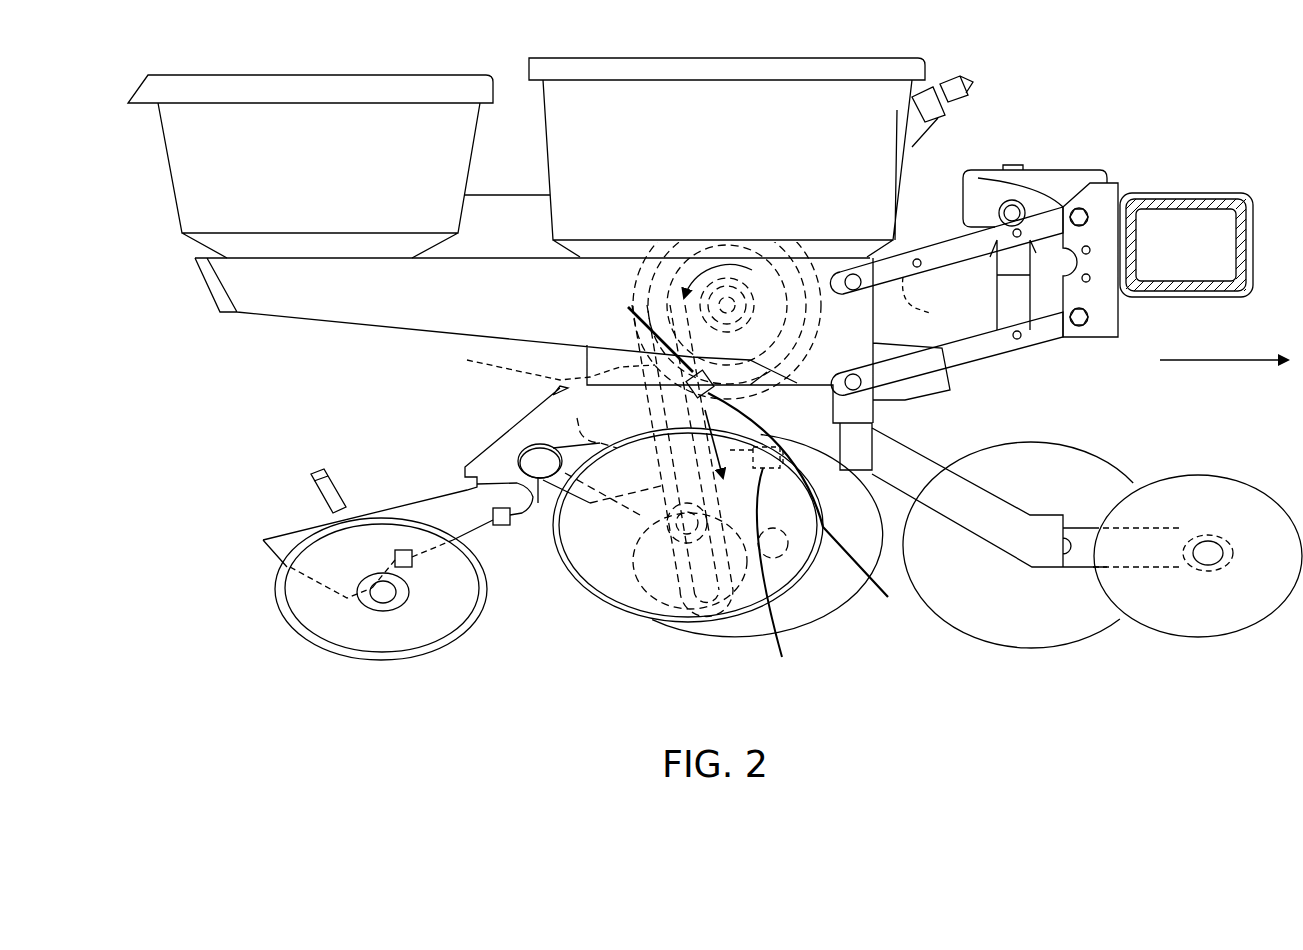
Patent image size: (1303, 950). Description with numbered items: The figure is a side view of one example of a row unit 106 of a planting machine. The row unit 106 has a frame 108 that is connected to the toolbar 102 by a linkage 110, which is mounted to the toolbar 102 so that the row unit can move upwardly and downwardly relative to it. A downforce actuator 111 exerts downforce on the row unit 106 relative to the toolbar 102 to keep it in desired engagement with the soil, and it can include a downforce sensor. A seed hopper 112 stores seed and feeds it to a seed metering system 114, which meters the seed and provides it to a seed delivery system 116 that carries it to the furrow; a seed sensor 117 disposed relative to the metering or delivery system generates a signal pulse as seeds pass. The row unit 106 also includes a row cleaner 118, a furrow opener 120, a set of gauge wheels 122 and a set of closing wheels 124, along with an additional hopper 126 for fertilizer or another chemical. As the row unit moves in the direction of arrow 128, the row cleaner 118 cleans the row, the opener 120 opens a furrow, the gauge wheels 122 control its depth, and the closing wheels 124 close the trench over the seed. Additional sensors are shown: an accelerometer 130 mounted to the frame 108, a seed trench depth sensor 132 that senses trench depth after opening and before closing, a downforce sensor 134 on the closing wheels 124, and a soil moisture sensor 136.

The toolbar 102 is at (1247, 217).
The row unit 106 is at (1008, 103).
The frame 108 is at (513, 437).
The linkage 110 is at (910, 238).
The downforce actuator 111 is at (968, 176).
The seed hopper 112 is at (778, 151).
The seed metering system 114 is at (760, 260).
The seed delivery system 116 is at (533, 362).
The seed sensor 117 is at (833, 598).
The row cleaner 118 is at (1047, 428).
The furrow opener 120 is at (882, 630).
The gauge wheels 122 is at (615, 598).
The closing wheels 124 is at (317, 632).
The additional hopper 126 is at (283, 167).
The direction arrow 128 is at (1210, 364).
The row unit accelerometer 130 is at (1054, 142).
The seed trench depth sensor 132 is at (765, 566).
The downforce sensor 134 is at (405, 567).
The soil moisture sensor 136 is at (500, 525).